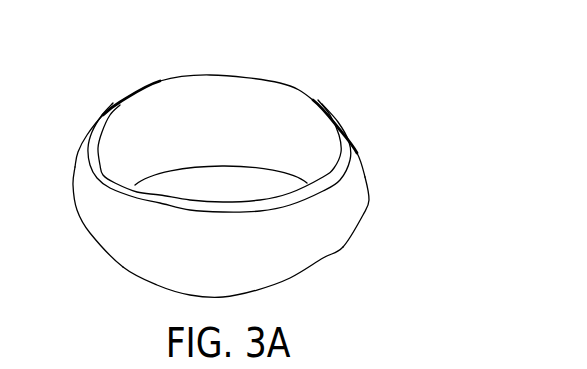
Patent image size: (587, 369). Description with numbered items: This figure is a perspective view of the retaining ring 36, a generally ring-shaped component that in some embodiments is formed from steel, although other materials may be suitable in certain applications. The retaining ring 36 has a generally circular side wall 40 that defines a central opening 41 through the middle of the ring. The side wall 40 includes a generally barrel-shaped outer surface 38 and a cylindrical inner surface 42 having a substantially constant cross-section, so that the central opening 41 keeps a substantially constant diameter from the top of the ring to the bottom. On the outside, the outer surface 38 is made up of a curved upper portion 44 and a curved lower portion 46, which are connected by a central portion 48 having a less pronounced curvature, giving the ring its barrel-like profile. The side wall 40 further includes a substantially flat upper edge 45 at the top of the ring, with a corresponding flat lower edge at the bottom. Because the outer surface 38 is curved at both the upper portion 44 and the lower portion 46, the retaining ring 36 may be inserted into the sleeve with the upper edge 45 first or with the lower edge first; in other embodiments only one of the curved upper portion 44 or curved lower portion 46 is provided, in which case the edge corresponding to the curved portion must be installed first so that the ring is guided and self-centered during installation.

The retaining ring 36 is at (470, 165).
The outer surface 38 is at (88, 195).
The circular side wall 40 is at (365, 160).
The central opening 41 is at (198, 185).
The cylindrical inner surface 42 is at (132, 118).
The curved upper portion 44 is at (350, 142).
The upper edge 45 is at (303, 90).
The curved lower portion 46 is at (343, 247).
The central portion 48 is at (363, 197).